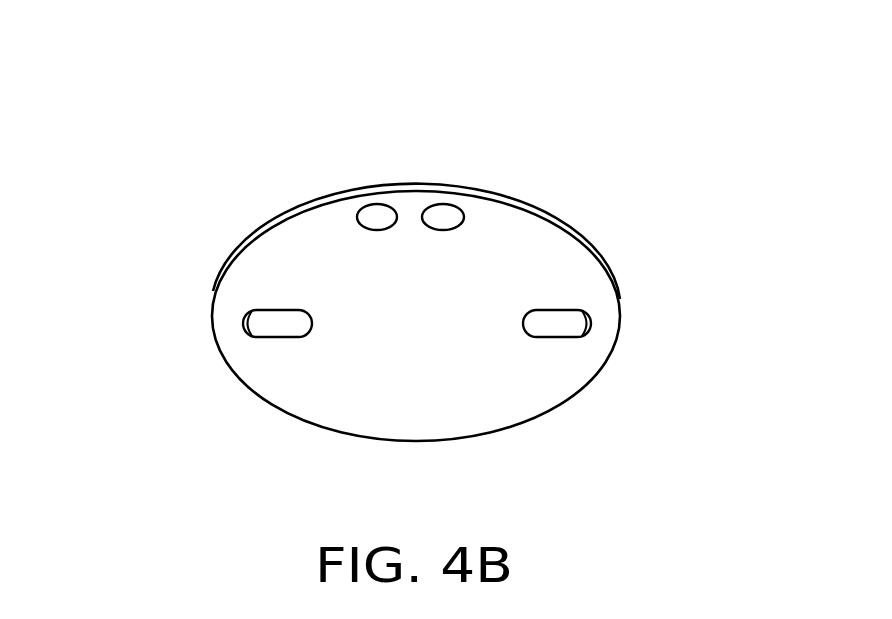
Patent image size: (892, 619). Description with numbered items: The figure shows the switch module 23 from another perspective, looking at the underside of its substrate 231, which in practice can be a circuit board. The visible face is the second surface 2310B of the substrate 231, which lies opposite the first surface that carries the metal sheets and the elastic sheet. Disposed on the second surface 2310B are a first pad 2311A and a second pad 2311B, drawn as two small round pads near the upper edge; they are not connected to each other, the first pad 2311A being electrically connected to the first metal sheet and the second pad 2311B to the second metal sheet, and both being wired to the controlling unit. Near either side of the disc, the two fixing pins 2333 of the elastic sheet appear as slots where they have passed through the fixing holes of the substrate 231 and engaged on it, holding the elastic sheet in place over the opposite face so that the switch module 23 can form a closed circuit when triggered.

The switch module 23 is at (415, 108).
The substrate 231 is at (273, 223).
The first pad 2311A is at (377, 218).
The second pad 2311B is at (497, 162).
The fixing pins 2333 is at (278, 327).
The second surface 2310B is at (488, 398).